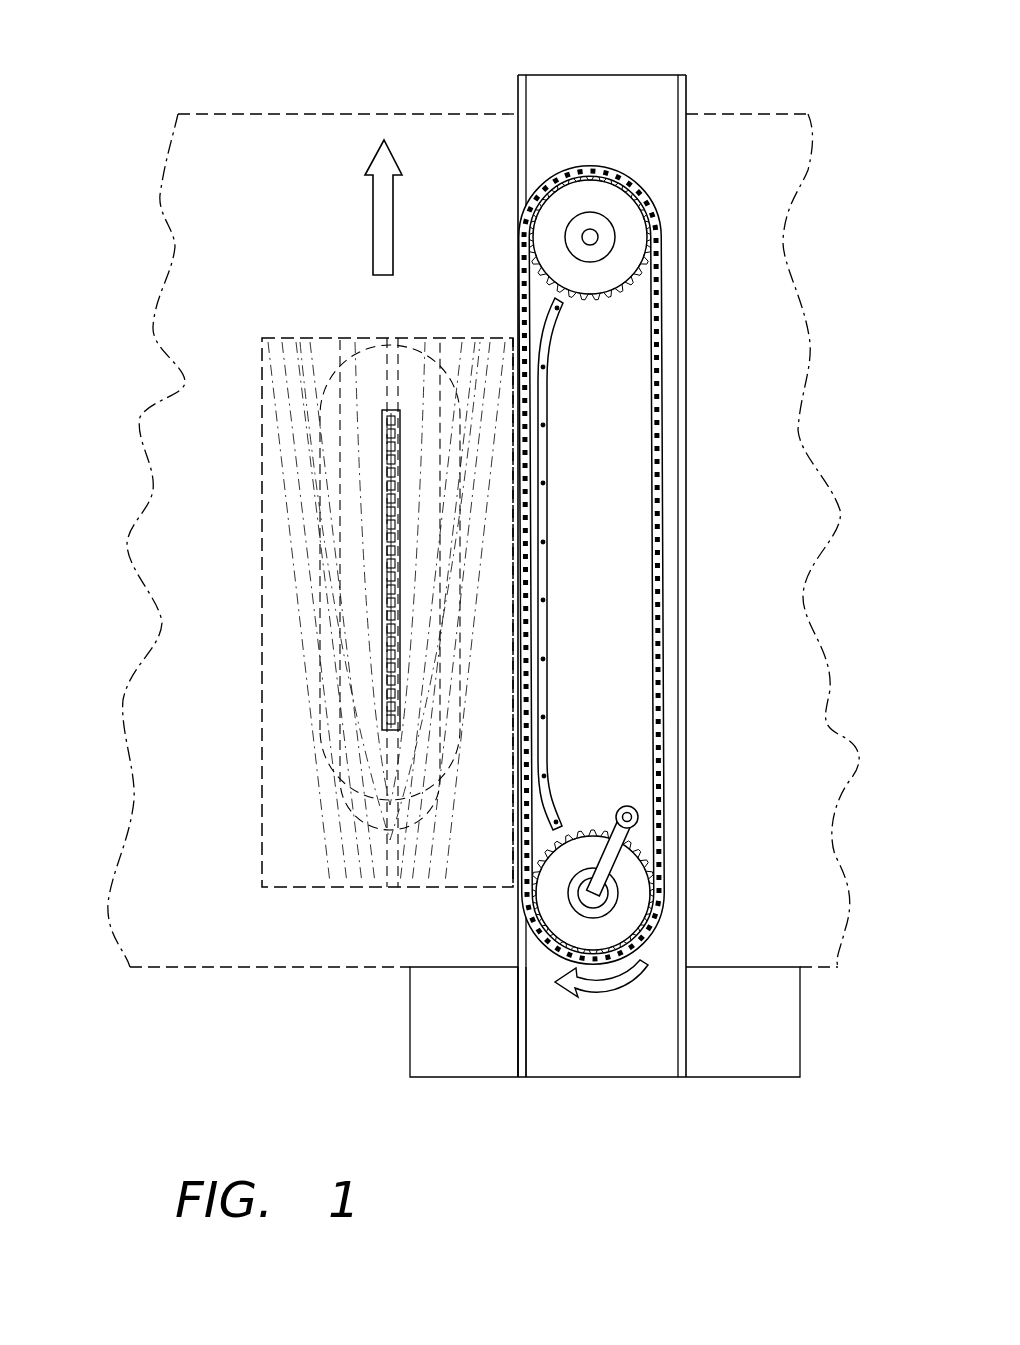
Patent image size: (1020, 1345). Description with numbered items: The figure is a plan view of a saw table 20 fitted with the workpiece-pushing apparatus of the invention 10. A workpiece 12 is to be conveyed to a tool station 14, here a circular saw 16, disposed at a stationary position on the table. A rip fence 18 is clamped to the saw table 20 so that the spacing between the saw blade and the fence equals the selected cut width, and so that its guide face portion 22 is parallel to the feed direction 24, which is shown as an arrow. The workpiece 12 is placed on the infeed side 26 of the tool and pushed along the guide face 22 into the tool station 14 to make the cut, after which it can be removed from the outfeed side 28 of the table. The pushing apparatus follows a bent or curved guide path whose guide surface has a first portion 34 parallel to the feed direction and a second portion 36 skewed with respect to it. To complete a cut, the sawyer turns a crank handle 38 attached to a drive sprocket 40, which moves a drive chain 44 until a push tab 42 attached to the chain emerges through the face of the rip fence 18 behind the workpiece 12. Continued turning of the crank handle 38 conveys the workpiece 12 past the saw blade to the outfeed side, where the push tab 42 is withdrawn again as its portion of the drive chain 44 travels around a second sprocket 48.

The apparatus of the invention 10 is at (708, 657).
The workpiece 12 is at (260, 737).
The tool station 14 is at (345, 463).
The circular saw 16 is at (388, 603).
The rip fence 18 is at (622, 1028).
The saw table 20 is at (177, 430).
The guide face portion 22 is at (520, 1029).
The feed direction 24 is at (387, 217).
The infeed side 26 is at (177, 950).
The outfeed side 28 is at (313, 133).
The first portion of the guide surface 34 is at (548, 583).
The second portion of the guide surface 36 is at (557, 317).
The crank handle 38 is at (607, 860).
The drive sprocket 40 is at (620, 915).
The push tab 42 is at (513, 892).
The drive chain 44 is at (655, 738).
The second sprocket 48 is at (630, 247).